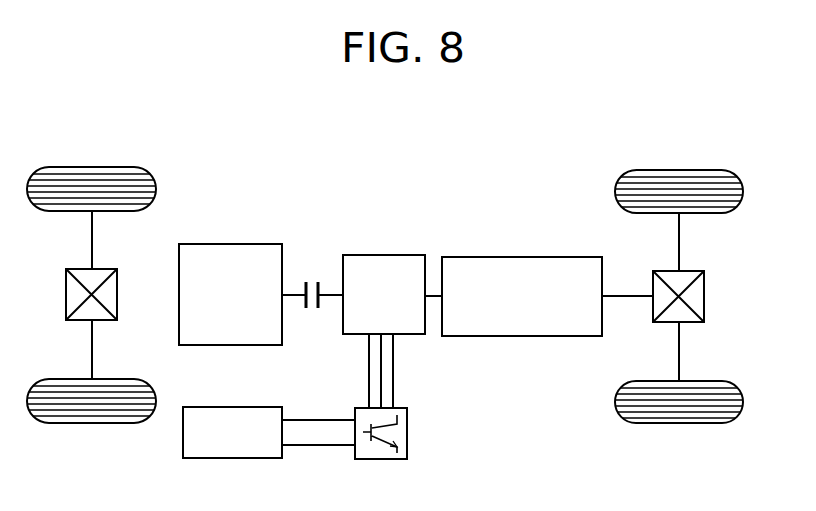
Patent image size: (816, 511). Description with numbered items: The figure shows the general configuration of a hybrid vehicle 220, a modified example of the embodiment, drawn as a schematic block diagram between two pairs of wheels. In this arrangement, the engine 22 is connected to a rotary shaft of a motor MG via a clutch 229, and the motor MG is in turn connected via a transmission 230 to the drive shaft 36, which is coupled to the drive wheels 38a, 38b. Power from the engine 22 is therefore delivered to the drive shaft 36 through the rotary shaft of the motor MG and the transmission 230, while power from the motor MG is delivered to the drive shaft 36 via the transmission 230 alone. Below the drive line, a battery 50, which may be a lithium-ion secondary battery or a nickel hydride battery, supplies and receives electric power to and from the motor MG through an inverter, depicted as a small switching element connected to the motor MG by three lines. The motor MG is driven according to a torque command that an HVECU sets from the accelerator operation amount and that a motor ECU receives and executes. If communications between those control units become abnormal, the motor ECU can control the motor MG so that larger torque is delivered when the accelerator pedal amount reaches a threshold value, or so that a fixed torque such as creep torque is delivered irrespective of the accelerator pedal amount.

The engine 22 is at (232, 243).
The clutch 229 is at (314, 280).
The motor MG is at (383, 253).
The transmission 230 is at (482, 255).
The hybrid vehicle 220 is at (489, 145).
The drive shaft 36 is at (615, 295).
The drive wheel 38a is at (679, 170).
The drive wheel 38b is at (679, 423).
The battery 50 is at (243, 405).